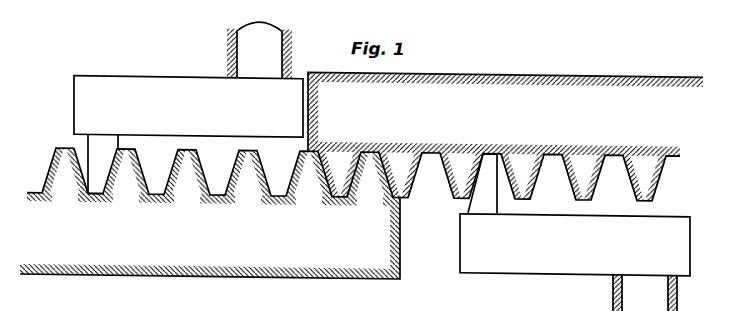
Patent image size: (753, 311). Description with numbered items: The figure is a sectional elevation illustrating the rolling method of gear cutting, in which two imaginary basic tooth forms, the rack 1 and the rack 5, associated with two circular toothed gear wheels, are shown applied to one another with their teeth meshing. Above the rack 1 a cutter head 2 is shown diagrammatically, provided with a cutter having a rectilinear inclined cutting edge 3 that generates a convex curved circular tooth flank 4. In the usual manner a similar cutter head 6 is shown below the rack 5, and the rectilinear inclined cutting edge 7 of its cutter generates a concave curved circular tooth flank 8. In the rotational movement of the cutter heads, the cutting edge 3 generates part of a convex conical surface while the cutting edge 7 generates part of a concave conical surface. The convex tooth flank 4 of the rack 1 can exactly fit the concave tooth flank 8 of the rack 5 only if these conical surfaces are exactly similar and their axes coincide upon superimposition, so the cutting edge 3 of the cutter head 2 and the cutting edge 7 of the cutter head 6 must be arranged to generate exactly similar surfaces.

The rack 1 is at (210, 213).
The cutter head 2 is at (188, 78).
The rectilinear inclined cutting edge 3 is at (103, 163).
The convex curved circular tooth flank 4 is at (106, 195).
The rack 5 is at (505, 136).
The cutter head 6 is at (575, 262).
The cutting edge 7 is at (477, 182).
The concave curved circular tooth flank 8 is at (477, 181).